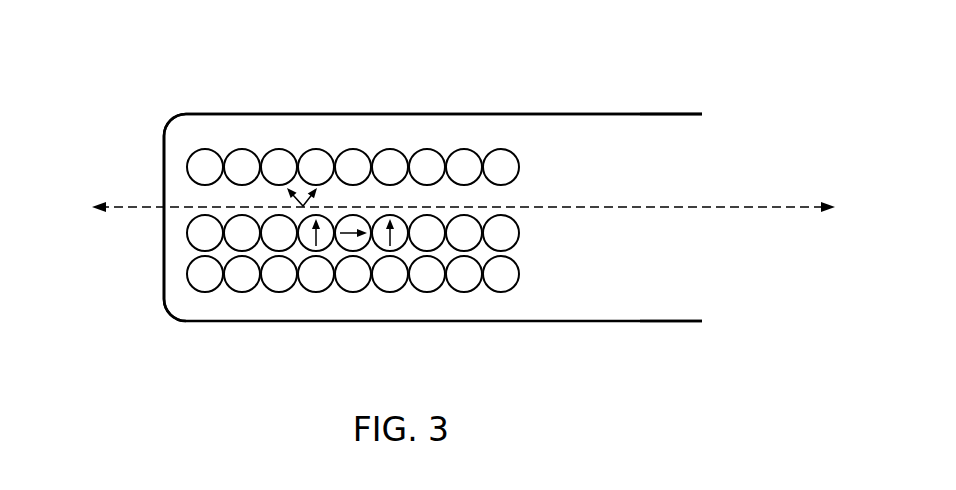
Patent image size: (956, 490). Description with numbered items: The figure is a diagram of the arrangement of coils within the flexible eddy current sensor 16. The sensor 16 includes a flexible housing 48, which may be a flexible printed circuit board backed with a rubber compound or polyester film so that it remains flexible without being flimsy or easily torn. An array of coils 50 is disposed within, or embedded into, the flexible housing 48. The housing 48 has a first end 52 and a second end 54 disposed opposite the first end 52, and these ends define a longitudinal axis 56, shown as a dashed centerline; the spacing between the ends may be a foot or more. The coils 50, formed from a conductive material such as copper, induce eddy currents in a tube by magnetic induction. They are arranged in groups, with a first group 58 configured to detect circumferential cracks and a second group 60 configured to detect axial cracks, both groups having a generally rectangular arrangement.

The flexible eddy current sensor 16 is at (142, 38).
The flexible housing 48 is at (431, 126).
The coils 50 is at (335, 224).
The first end 52 is at (128, 146).
The second end 54 is at (710, 153).
The longitudinal axis 56 is at (731, 209).
The first group 58 is at (540, 156).
The second group 60 is at (533, 245).